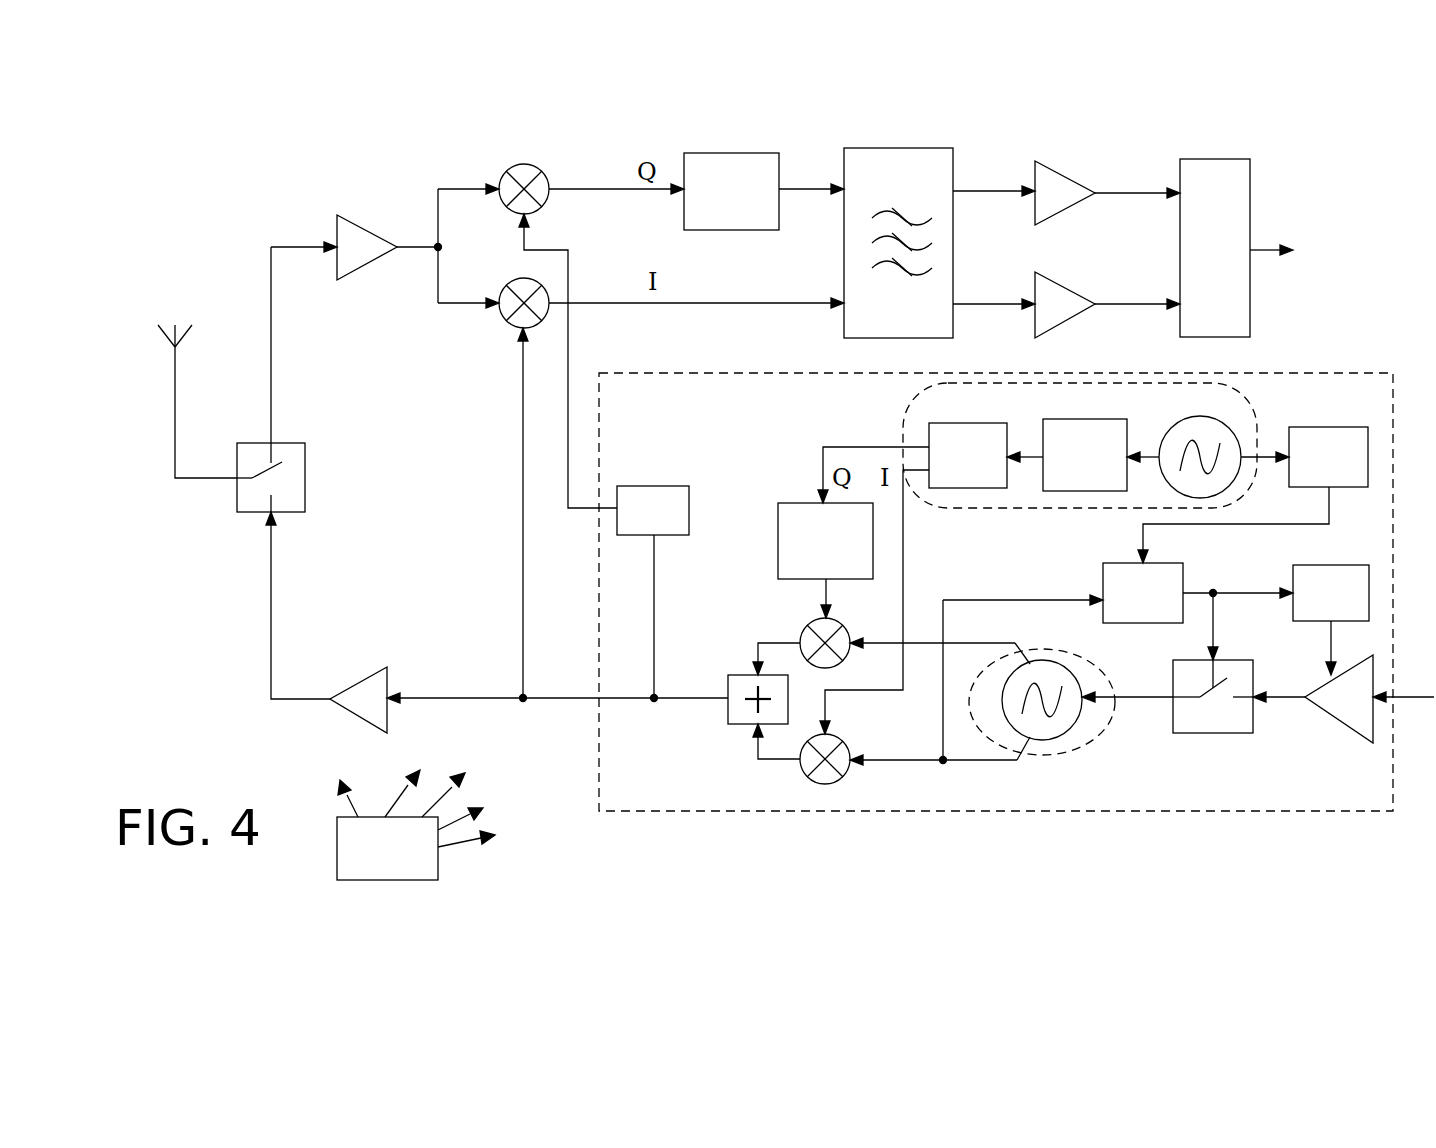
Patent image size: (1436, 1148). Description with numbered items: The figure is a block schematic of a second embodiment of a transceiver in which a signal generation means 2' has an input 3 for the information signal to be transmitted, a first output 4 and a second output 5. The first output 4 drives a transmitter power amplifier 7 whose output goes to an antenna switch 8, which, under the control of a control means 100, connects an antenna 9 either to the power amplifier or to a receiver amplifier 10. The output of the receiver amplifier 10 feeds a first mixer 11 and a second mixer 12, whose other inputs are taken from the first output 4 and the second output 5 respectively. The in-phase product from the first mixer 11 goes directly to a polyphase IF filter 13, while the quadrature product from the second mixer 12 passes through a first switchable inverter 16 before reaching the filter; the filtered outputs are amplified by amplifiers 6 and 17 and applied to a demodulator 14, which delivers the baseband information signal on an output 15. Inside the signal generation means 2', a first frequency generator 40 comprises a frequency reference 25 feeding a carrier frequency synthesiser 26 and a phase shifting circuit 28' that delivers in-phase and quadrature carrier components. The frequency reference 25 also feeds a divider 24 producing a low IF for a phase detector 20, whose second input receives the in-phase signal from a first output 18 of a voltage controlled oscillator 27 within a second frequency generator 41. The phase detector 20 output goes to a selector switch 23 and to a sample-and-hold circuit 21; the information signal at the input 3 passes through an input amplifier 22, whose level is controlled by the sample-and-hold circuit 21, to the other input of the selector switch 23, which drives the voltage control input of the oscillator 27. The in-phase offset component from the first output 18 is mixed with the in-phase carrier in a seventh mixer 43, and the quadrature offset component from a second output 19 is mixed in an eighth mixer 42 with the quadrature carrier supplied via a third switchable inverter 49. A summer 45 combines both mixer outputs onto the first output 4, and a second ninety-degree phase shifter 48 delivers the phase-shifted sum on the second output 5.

The signal generation means 2' is at (996, 557).
The input 3 is at (1423, 697).
The first output 4 is at (587, 700).
The second output 5 is at (587, 510).
The amplifier 6 is at (1060, 327).
The transmitter power amplifier 7 is at (357, 682).
The antenna switch 8 is at (255, 513).
The antenna 9 is at (187, 330).
The receiver amplifier 10 is at (355, 223).
The first mixer 11 is at (500, 316).
The second mixer 12 is at (533, 167).
The polyphase IF filter 13 is at (893, 148).
The demodulator 14 is at (1215, 248).
The output 15 is at (1263, 247).
The first switchable inverter 16 is at (720, 153).
The amplifier 17 is at (1055, 168).
The first output 18 is at (1003, 762).
The second output 19 is at (1000, 643).
The phase detector 20 is at (1143, 593).
The sample-and-hold circuit 21 is at (1331, 593).
The input amplifier 22 is at (1333, 720).
The selector switch 23 is at (1187, 733).
The divider 24 is at (1305, 427).
The frequency reference 25 is at (1180, 420).
The carrier frequency synthesiser 26 is at (1085, 455).
The voltage controlled oscillator 27 is at (1063, 732).
The phase shifting circuit 28' is at (968, 455).
The first frequency generator 40 is at (900, 415).
The second frequency generator 41 is at (1110, 723).
The eighth mixer 42 is at (807, 622).
The seventh mixer 43 is at (798, 765).
The summer 45 is at (735, 675).
The second 90° phase shifter 48 is at (653, 486).
The third switchable inverter 49 is at (777, 535).
The control means 100 is at (416, 825).